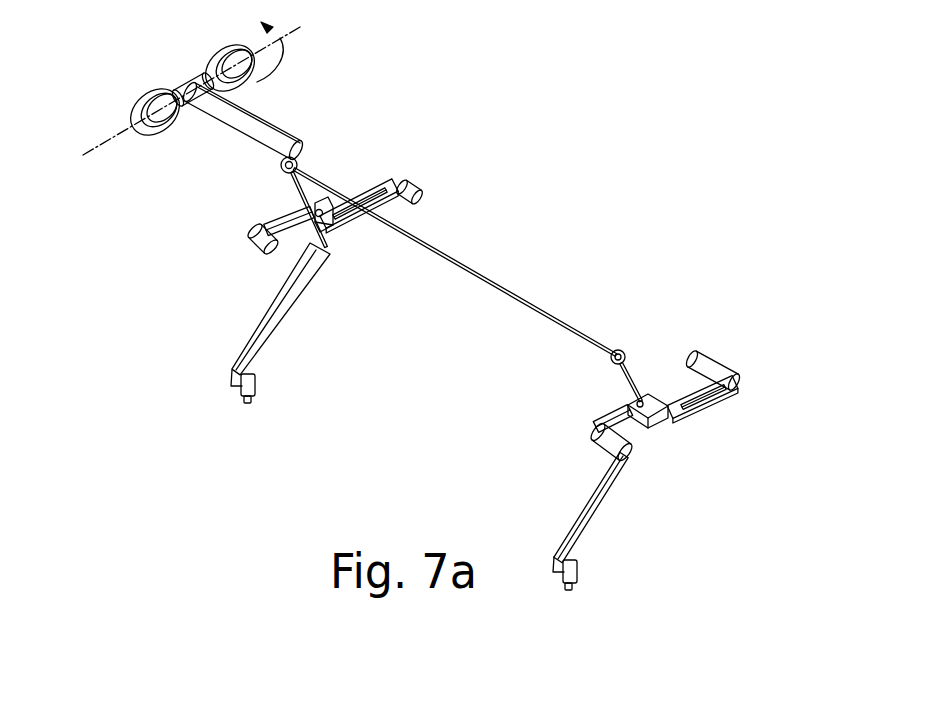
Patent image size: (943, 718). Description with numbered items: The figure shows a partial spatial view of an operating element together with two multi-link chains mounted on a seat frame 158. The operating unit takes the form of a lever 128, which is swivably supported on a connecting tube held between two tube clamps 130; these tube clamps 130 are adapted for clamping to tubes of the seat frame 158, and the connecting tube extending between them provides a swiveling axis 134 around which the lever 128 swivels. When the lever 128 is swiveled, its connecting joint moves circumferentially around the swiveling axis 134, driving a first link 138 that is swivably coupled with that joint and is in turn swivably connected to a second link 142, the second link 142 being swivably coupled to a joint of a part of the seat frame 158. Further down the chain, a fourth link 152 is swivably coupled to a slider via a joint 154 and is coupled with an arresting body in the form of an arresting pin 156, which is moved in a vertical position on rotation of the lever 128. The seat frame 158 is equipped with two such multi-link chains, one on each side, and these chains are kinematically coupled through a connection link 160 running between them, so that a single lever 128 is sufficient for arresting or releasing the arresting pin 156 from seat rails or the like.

The lever 128 is at (267, 118).
The tube clamps 130 is at (150, 90).
The swiveling axis 134 is at (97, 140).
The first link 138 is at (227, 133).
The second link 142 is at (640, 370).
The fourth link 152 is at (287, 300).
The joint 154 is at (218, 352).
The arresting pin 156 is at (257, 387).
The seat frame 158 is at (372, 187).
The connection link 160 is at (513, 293).